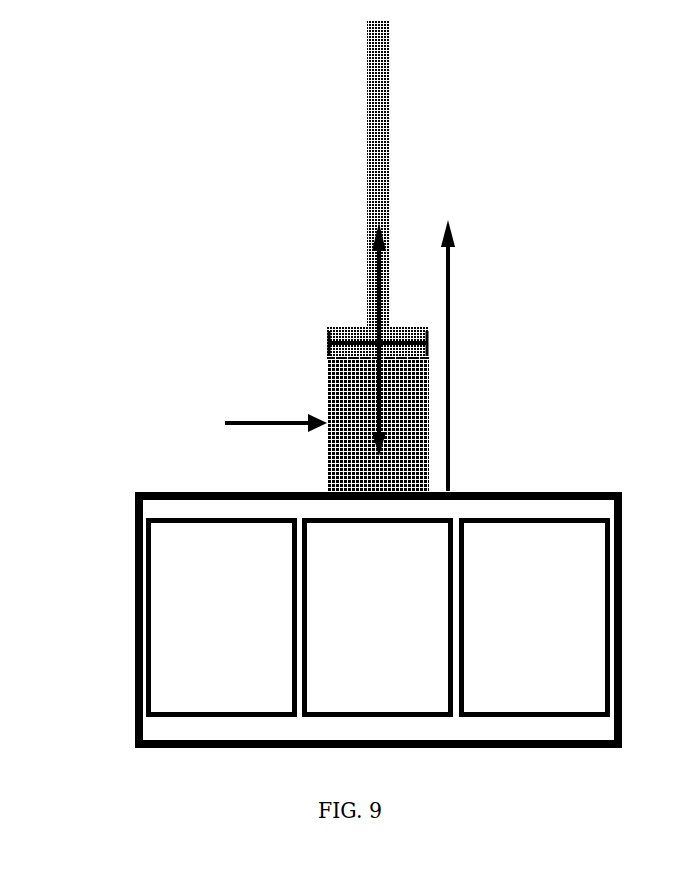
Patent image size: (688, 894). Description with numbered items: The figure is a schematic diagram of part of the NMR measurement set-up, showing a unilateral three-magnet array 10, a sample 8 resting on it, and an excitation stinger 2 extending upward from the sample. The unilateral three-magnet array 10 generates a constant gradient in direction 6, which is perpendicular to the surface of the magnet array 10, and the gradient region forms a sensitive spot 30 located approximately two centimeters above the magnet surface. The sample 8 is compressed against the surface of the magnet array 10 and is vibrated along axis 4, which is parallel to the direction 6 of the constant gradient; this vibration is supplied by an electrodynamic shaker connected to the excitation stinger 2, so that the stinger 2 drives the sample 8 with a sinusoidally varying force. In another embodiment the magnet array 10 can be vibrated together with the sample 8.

The excitation stinger 2 is at (390, 181).
The vibration axis 4 is at (375, 303).
The constant gradient direction 6 is at (450, 305).
The sample 8 is at (327, 479).
The unilateral three-magnet array 10 is at (135, 572).
The sensitive spot 30 is at (232, 381).